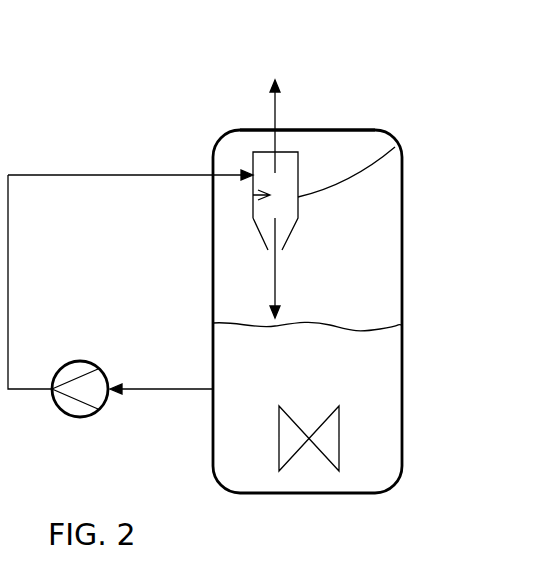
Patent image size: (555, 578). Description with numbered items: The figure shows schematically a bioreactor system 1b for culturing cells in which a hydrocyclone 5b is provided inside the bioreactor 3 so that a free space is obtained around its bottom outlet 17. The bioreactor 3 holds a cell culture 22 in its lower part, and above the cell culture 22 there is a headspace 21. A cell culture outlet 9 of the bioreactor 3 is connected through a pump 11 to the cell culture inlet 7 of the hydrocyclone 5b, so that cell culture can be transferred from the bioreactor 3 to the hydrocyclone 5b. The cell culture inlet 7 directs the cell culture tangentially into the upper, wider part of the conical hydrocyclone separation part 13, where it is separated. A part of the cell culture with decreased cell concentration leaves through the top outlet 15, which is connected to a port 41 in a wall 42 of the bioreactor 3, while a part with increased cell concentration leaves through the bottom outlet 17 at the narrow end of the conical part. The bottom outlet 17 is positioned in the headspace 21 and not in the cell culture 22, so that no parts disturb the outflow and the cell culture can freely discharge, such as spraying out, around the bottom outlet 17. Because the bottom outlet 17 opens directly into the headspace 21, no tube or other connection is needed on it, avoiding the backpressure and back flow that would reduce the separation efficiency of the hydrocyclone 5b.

The bioreactor system 1b is at (251, 249).
The bioreactor 3 is at (208, 270).
The hydrocyclone 5b is at (395, 147).
The cell culture inlet 7 is at (250, 172).
The cell culture outlet 9 is at (212, 392).
The pump 11 is at (70, 418).
The hydrocyclone separation part 13 is at (255, 195).
The top outlet 15 is at (268, 160).
The bottom outlet 17 is at (275, 250).
The headspace 21 is at (366, 249).
The cell culture 22 is at (342, 387).
The port 41 is at (280, 128).
The wall 42 is at (320, 130).